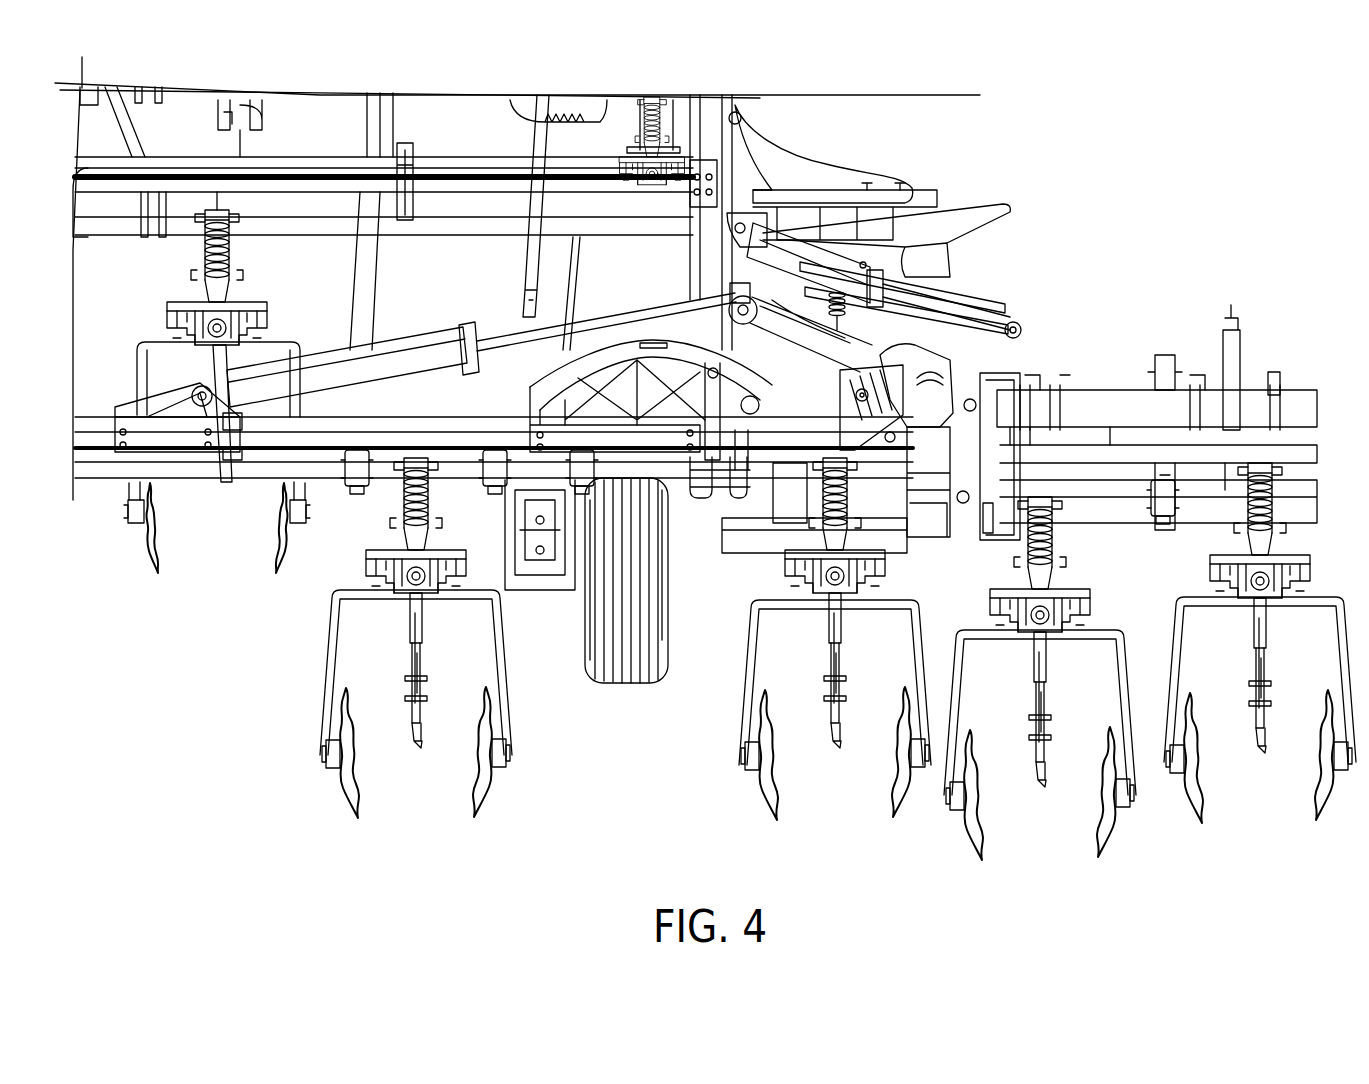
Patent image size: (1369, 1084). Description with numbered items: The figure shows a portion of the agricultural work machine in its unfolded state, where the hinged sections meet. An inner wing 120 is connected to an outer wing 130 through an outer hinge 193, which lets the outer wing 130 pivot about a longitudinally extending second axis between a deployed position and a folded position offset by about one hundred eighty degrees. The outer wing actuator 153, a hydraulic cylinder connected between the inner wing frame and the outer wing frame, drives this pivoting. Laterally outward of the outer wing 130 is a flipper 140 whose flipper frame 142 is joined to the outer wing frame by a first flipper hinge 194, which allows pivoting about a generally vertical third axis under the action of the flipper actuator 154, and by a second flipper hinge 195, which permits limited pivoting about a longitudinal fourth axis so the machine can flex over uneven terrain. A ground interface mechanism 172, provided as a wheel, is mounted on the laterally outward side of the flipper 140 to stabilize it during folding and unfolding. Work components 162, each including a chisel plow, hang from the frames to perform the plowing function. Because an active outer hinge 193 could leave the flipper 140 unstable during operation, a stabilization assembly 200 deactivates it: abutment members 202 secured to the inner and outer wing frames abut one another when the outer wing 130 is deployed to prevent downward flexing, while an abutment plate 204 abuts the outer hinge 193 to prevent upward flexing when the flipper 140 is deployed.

The inner wing 120 is at (325, 795).
The outer wing 130 is at (735, 795).
The flipper 140 is at (1045, 855).
The flipper frame 142 is at (1105, 385).
The outer wing actuator 153 is at (488, 315).
The flipper actuator 154 is at (855, 252).
The work component 162 is at (290, 668).
The ground interface mechanism 172 is at (542, 660).
The outer hinge 193 is at (680, 340).
The first flipper hinge 194 is at (938, 362).
The second flipper hinge 195 is at (958, 538).
The stabilization assembly 200 is at (757, 570).
The abutment member 202 is at (735, 503).
The abutment plate 204 is at (958, 286).